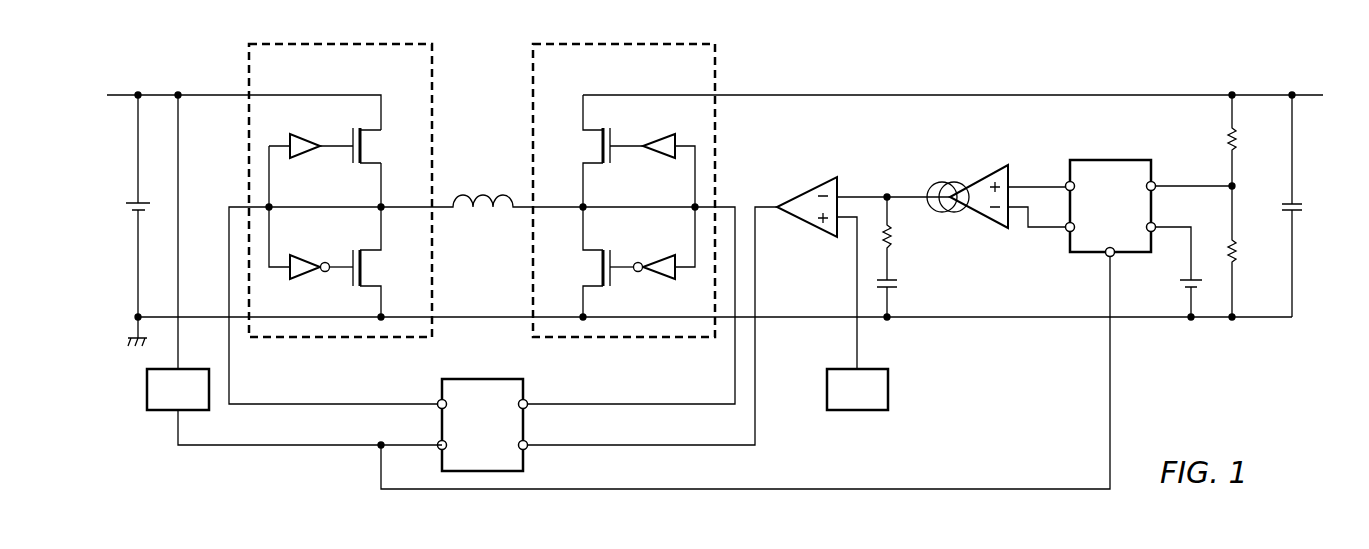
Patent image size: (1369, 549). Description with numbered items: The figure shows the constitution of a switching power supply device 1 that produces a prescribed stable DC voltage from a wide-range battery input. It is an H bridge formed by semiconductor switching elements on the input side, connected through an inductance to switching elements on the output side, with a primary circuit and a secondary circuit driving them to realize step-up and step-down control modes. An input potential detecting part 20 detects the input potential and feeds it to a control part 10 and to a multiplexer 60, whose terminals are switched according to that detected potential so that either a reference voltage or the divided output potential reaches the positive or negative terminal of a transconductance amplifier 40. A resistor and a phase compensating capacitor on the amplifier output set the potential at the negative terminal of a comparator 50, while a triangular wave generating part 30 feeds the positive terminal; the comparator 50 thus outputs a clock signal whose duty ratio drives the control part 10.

The switching power supply device 1 is at (1178, 381).
The control part 10 is at (483, 379).
The input potential detecting part 20 is at (147, 387).
The triangular wave generating part 30 is at (888, 388).
The transconductance amplifier 40 is at (975, 183).
The comparator 50 is at (805, 193).
The multiplexer 60 is at (1120, 160).